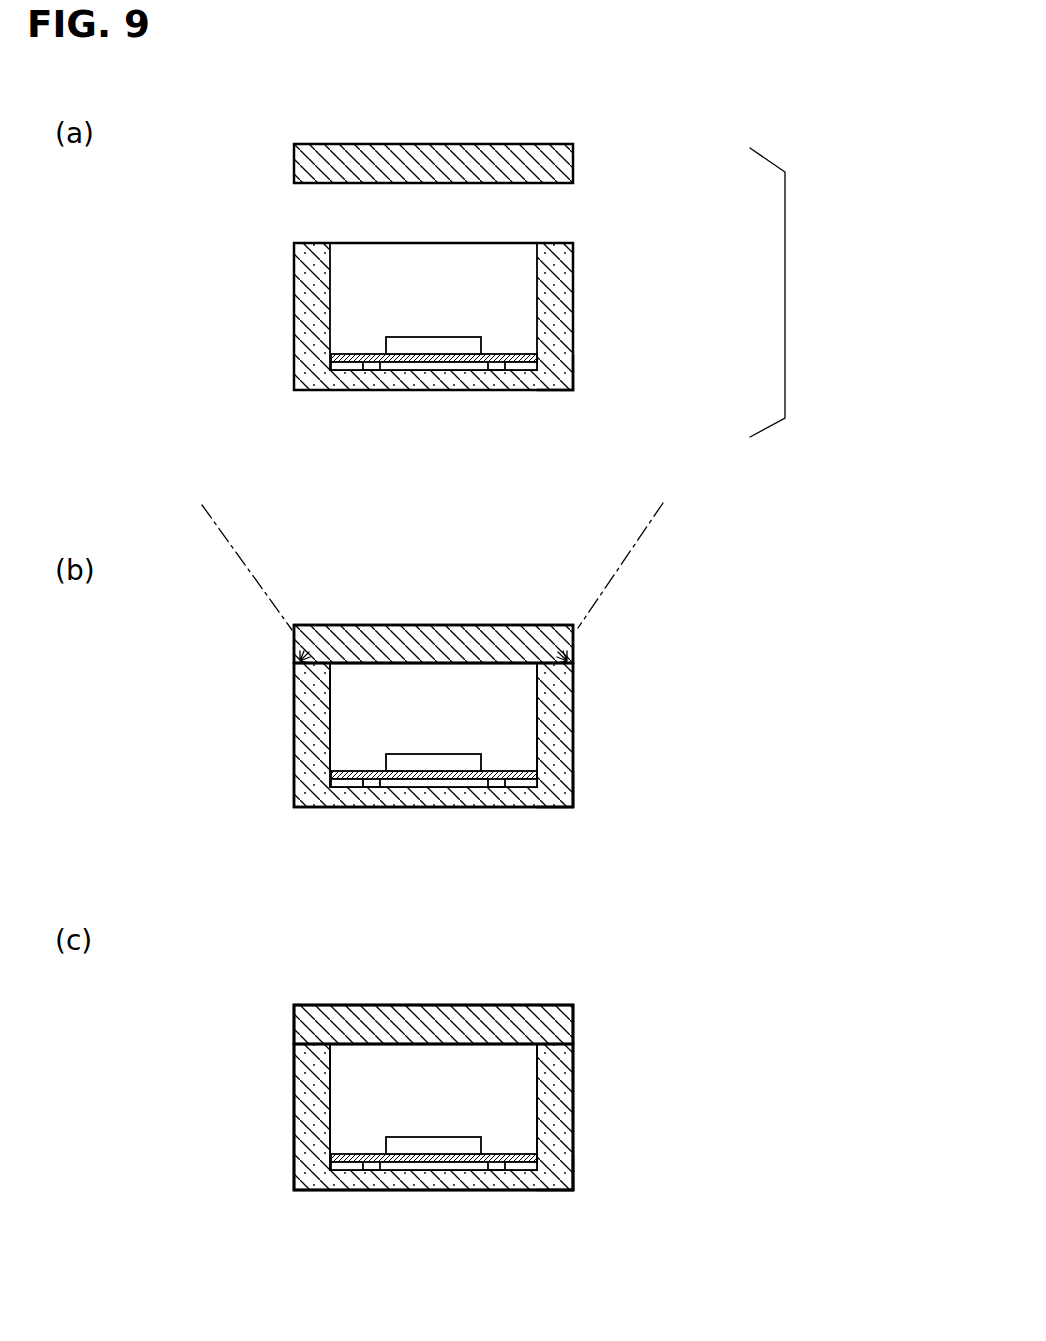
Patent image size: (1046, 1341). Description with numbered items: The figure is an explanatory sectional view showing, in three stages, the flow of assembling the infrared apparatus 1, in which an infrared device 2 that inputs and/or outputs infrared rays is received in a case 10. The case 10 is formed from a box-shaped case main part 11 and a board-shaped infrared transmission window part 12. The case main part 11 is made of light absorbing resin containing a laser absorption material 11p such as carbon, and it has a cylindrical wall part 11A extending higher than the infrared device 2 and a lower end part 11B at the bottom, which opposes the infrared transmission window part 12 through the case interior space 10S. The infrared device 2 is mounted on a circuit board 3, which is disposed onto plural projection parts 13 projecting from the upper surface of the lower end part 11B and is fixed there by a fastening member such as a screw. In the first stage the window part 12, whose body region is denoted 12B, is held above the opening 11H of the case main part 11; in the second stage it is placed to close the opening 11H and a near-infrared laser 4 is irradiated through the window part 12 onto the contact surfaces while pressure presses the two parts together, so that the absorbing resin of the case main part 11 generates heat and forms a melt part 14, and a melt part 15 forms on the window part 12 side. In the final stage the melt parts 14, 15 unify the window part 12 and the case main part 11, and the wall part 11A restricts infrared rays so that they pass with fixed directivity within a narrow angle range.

The infrared apparatus 1 is at (278, 968).
The infrared device 2 is at (430, 345).
The circuit board 3 is at (523, 362).
The near-infrared laser 4 is at (237, 557).
The case 10 is at (507, 614).
The case interior space 10S is at (460, 693).
The case main part 11 is at (296, 389).
The wall part 11A is at (305, 312).
The lower end part 11B is at (349, 383).
The opening 11H is at (508, 243).
The laser absorption material 11p is at (573, 390).
The infrared transmission window part 12 is at (296, 164).
The lid body 12B is at (372, 168).
The projection parts 13 is at (373, 364).
The melt part 14 is at (297, 662).
The melt part 15 is at (292, 648).